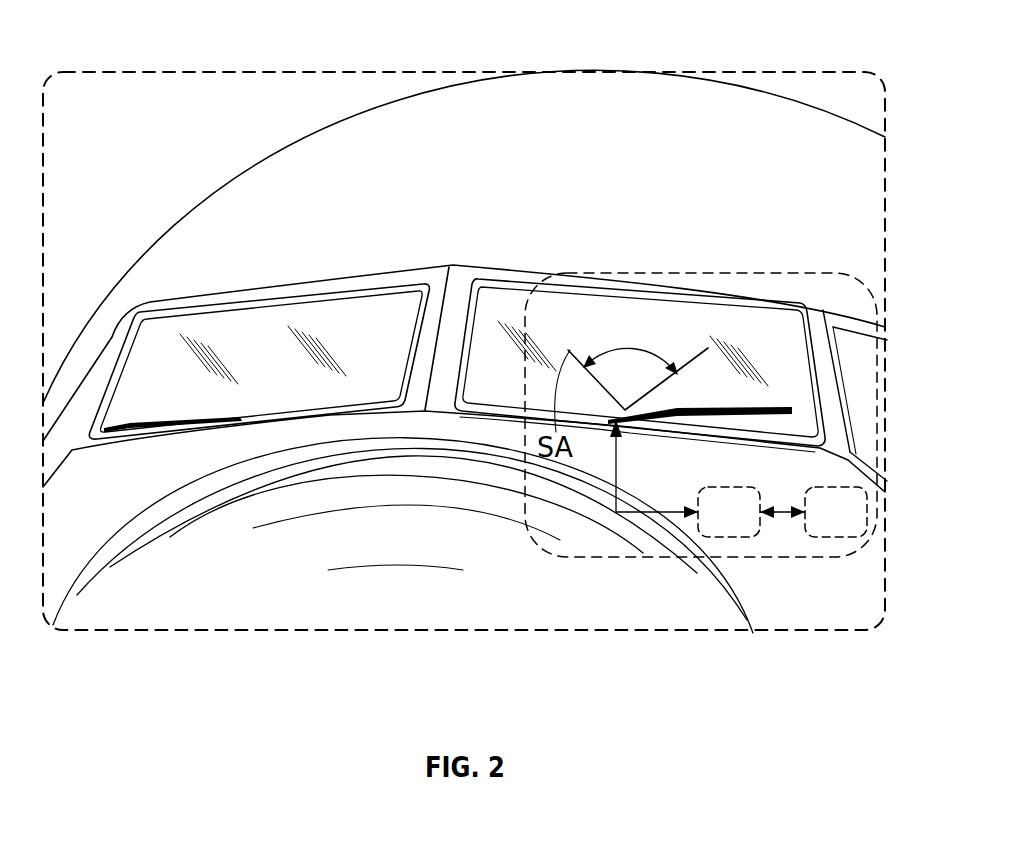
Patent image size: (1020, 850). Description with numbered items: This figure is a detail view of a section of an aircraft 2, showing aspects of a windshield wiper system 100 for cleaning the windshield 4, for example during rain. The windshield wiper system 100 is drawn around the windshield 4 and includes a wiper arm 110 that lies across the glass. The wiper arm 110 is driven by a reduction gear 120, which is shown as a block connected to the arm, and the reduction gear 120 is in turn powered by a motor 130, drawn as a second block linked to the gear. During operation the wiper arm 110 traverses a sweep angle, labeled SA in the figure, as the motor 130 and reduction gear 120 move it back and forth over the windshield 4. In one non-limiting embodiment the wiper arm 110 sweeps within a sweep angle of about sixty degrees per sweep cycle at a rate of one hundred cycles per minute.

The aircraft 2 is at (241, 153).
The windshield 4 is at (383, 285).
The windshield wiper system 100 is at (710, 273).
The wiper arm 110 is at (767, 408).
The reduction gear 120 is at (723, 537).
The motor 130 is at (847, 537).